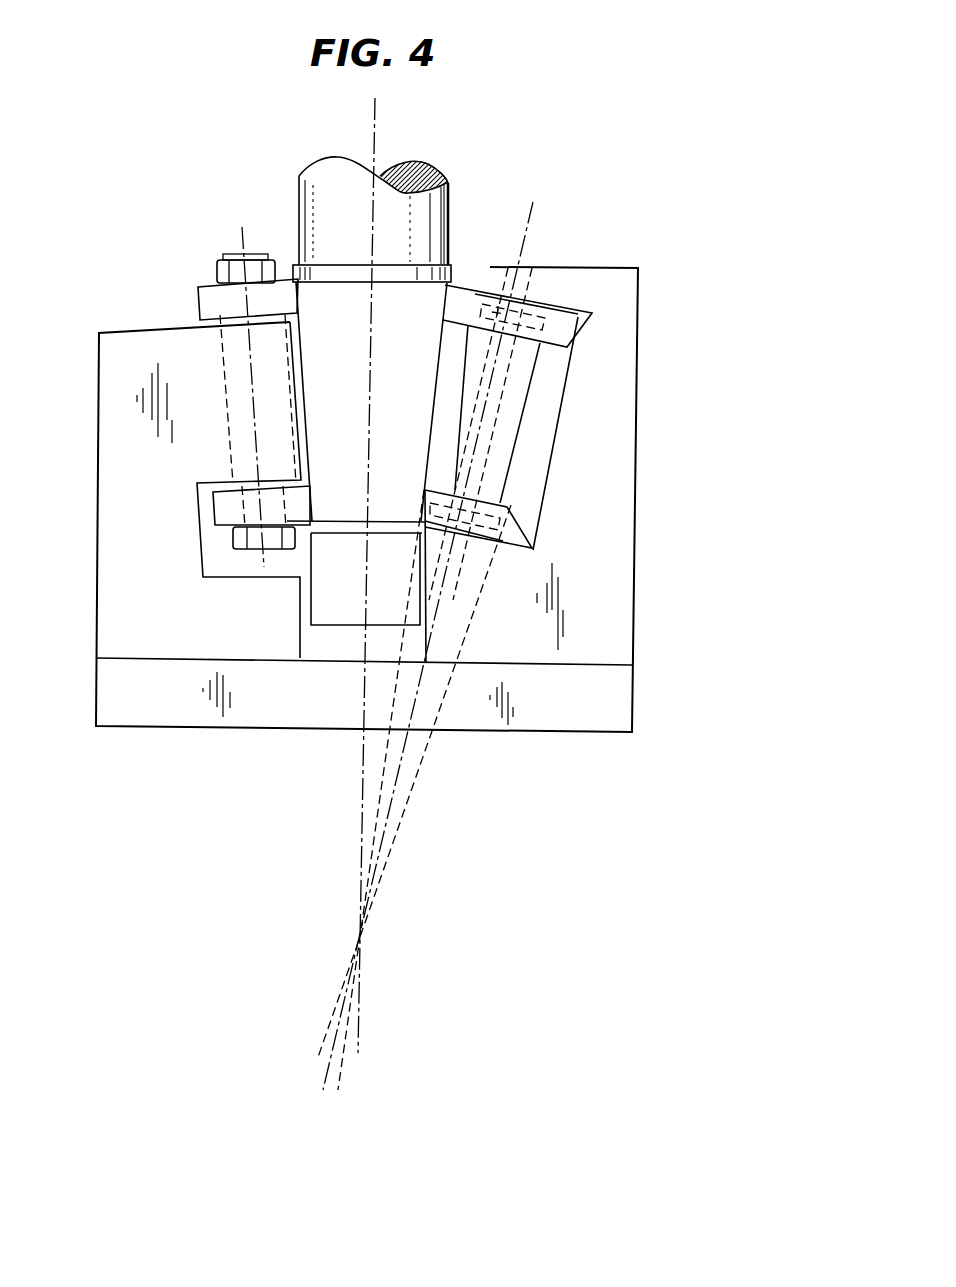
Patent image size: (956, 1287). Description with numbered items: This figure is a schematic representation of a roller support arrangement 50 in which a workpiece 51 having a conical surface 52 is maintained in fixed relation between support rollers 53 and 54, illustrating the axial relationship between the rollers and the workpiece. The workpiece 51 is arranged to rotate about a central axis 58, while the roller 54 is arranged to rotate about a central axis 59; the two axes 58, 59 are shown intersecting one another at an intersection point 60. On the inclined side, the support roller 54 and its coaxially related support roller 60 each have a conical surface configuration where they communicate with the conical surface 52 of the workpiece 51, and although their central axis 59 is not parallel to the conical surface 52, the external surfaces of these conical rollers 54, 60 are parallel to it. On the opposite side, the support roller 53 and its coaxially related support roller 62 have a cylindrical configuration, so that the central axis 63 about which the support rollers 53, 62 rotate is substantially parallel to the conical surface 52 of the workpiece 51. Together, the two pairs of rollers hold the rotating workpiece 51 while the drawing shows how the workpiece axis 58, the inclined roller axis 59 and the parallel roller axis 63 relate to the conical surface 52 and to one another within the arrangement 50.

The roller support arrangement 50 is at (636, 222).
The workpiece 51 is at (428, 165).
The conical surface 52 is at (297, 383).
The support roller 53 is at (200, 307).
The support roller 54 is at (460, 279).
The central axis 58 is at (378, 118).
The central axis 59 is at (533, 217).
The intersection point / support roller 60 is at (487, 520).
The support roller 62 is at (220, 505).
The central axis 63 is at (242, 238).